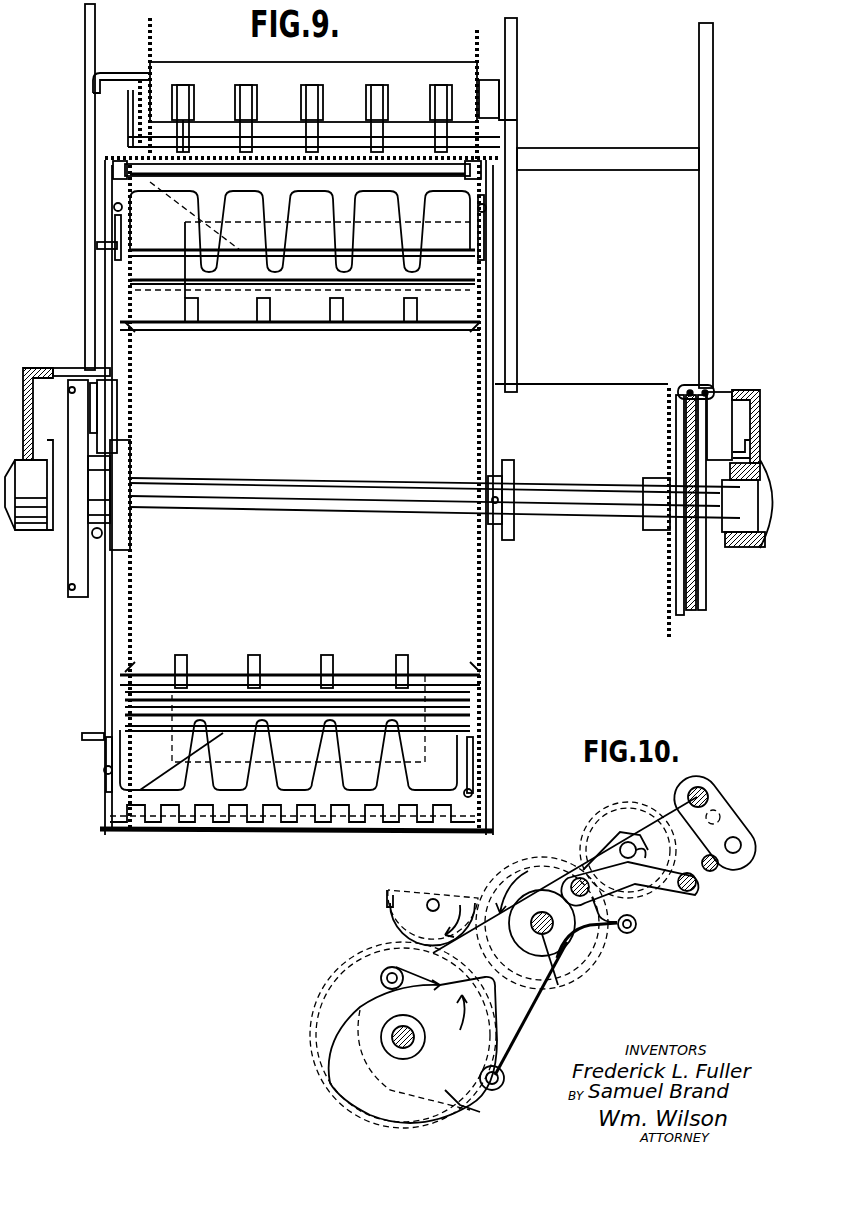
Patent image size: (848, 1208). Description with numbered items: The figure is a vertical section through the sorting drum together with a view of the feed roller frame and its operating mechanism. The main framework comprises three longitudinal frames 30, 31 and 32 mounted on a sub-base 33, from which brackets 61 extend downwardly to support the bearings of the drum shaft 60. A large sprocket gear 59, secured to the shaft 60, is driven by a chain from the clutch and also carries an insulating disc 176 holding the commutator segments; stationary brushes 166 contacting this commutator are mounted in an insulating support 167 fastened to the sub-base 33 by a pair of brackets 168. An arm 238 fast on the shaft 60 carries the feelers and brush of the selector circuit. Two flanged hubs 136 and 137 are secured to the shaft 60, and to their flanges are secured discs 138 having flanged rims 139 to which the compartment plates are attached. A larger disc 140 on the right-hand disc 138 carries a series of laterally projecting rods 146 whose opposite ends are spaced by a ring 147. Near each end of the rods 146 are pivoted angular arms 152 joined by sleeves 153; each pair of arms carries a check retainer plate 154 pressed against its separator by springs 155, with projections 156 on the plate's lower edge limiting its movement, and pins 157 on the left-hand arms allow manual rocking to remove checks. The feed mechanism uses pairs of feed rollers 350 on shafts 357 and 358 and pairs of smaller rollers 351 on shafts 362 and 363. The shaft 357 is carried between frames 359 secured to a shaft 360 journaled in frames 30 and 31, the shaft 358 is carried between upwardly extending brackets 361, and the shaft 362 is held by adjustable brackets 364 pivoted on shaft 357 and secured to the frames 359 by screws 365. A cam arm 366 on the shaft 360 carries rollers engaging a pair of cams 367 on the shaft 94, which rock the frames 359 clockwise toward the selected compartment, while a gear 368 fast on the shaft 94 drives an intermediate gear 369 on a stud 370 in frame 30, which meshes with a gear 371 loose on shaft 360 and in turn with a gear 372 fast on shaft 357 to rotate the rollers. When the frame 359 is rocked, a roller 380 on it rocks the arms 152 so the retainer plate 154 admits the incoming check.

In FIG. 9, the longitudinal frame 30 is at (85, 47).
In FIG. 9, the longitudinal frame 31 is at (510, 30).
In FIG. 9, the longitudinal frame 32 is at (706, 229).
In FIG. 9, the sub-base 33 is at (35, 368).
In FIG. 9, the sprocket gear 59 is at (667, 640).
In FIG. 9, the drum shaft 60 is at (330, 486).
In FIG. 9, the bracket 61 is at (37, 530).
In FIG. 10, the shaft 94 is at (395, 1032).
In FIG. 9, the flanged hub 136 is at (122, 455).
In FIG. 9, the flanged hub 137 is at (486, 478).
In FIG. 9, the disc 138 is at (133, 577).
In FIG. 9, the flanged rim 139 is at (130, 325).
In FIG. 9, the larger disc 140 is at (487, 708).
In FIG. 9, the lateral projecting rod 146 is at (445, 170).
In FIG. 9, the ring 147 is at (115, 165).
In FIG. 9, the angular arm 152 is at (112, 232).
In FIG. 9, the sleeve 153 is at (300, 172).
In FIG. 9, the check retainer or clamping plate 154 is at (292, 502).
In FIG. 9, the spring 155 is at (112, 207).
In FIG. 9, the projection 156 is at (264, 330).
In FIG. 9, the pin 157 is at (97, 247).
In FIG. 9, the brush 166 is at (696, 440).
In FIG. 9, the insulating support 167 is at (706, 606).
In FIG. 9, the bracket 168 is at (748, 445).
In FIG. 9, the insulating disc 176 is at (680, 615).
In FIG. 9, the arm 238 is at (105, 400).
In FIG. 9, the feed roller 350 is at (246, 98).
In FIG. 9, the smaller roller 351 is at (242, 138).
In FIG. 10, the shaft 357 is at (678, 862).
In FIG. 9, the shaft 358 is at (305, 100).
In FIG. 10, the shaft 358 is at (708, 797).
In FIG. 9, the frame 359 is at (128, 112).
In FIG. 10, the frame 359 is at (575, 950).
In FIG. 10, the shaft 360 is at (558, 988).
In FIG. 9, the bracket 361 is at (125, 93).
In FIG. 10, the bracket 361 is at (725, 800).
In FIG. 10, the shaft 362 is at (692, 890).
In FIG. 9, the shaft 363 is at (318, 147).
In FIG. 10, the shaft 363 is at (718, 868).
In FIG. 10, the adjustable bracket 364 is at (588, 880).
In FIG. 10, the screw 365 is at (600, 935).
In FIG. 10, the cam arm 366 is at (522, 1025).
In FIG. 10, the cam 367 is at (462, 1103).
In FIG. 10, the gear 368 is at (345, 960).
In FIG. 10, the intermediate gear 369 is at (385, 912).
In FIG. 10, the stud 370 is at (433, 898).
In FIG. 10, the gear 371 is at (530, 860).
In FIG. 10, the gear 372 is at (628, 805).
In FIG. 10, the roller 380 is at (636, 926).